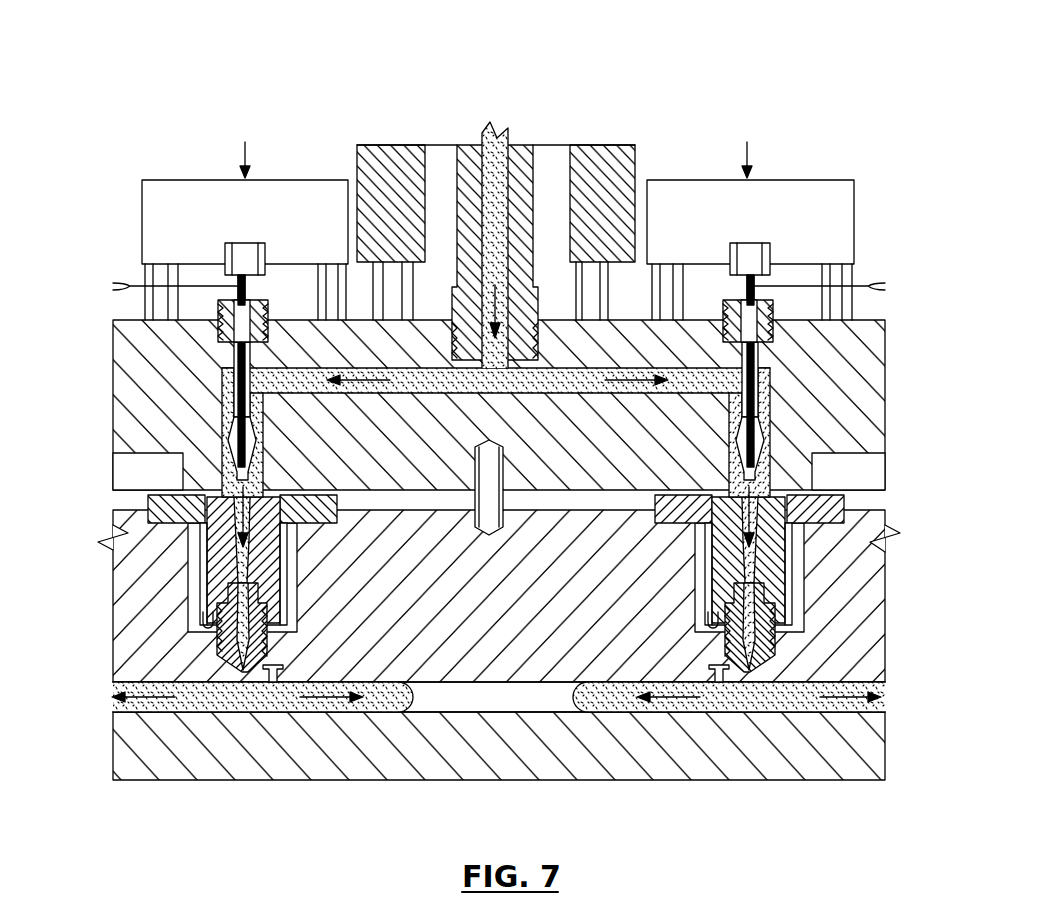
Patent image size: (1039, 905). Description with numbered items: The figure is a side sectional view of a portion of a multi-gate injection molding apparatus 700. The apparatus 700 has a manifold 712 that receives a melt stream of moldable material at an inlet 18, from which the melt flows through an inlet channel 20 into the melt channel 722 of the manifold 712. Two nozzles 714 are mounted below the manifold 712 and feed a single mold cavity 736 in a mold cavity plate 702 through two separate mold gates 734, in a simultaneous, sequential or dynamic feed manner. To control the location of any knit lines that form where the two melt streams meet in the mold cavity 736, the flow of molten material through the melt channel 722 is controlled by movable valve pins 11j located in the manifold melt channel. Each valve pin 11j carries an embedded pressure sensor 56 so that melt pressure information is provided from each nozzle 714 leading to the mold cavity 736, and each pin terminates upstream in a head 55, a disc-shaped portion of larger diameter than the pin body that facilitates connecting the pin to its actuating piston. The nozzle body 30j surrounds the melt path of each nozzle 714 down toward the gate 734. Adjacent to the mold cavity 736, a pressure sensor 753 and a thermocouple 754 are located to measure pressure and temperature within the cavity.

The multi-gate injection molding apparatus 700 is at (541, 92).
The inlet 18 is at (470, 335).
The inlet channel 20 is at (535, 365).
The head 55 is at (758, 250).
The manifold 712 is at (295, 335).
The melt channel 722 is at (630, 377).
The valve pin 11j is at (775, 342).
The pressure sensor 56 is at (772, 380).
The nozzle body 30j is at (772, 505).
The nozzle 714 is at (215, 550).
The thermocouple 754 is at (205, 600).
The gate 734 is at (752, 678).
The pressure sensor 753 is at (253, 690).
The mold cavity plate 702 is at (325, 760).
The mold cavity 736 is at (543, 688).